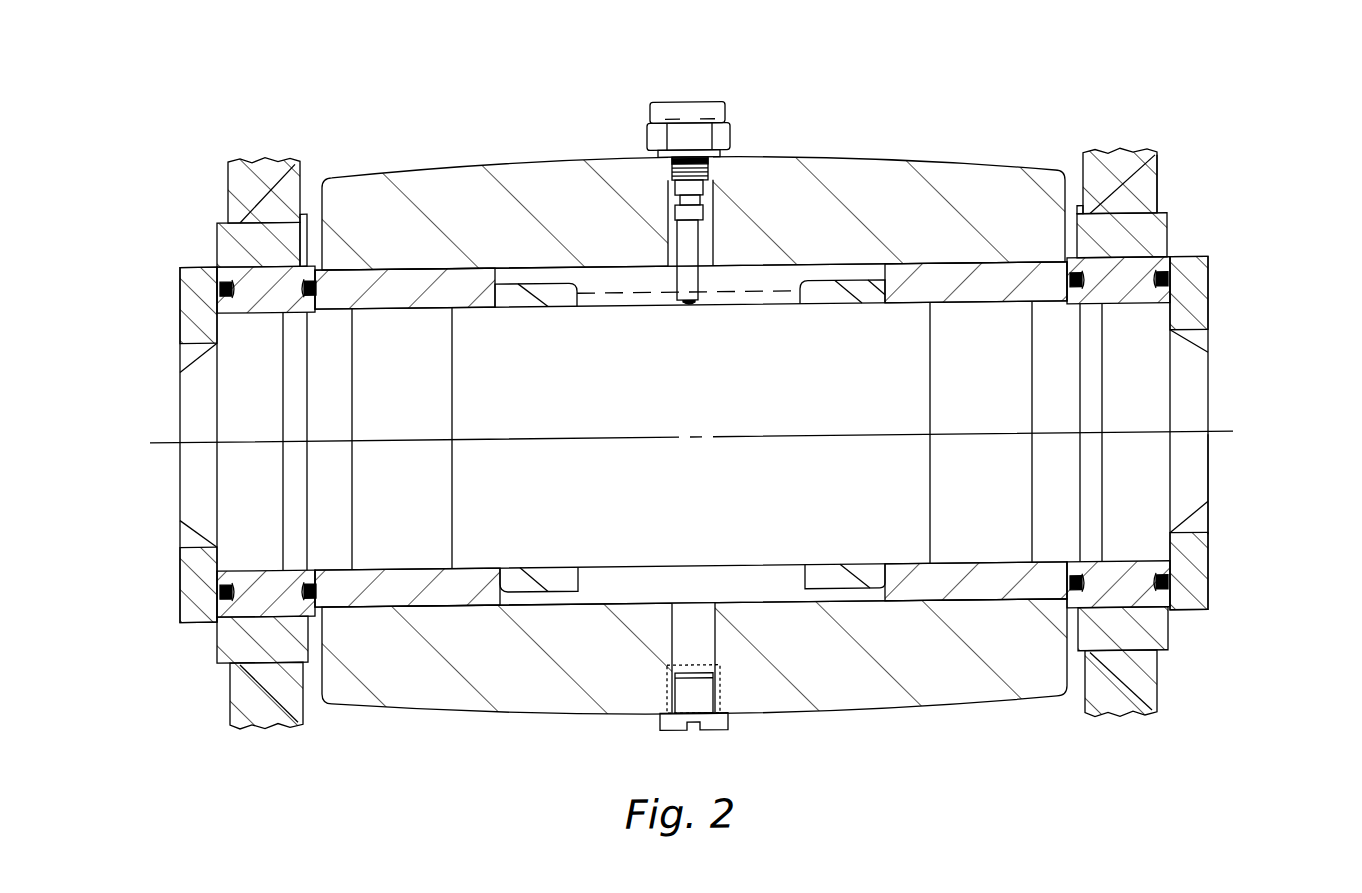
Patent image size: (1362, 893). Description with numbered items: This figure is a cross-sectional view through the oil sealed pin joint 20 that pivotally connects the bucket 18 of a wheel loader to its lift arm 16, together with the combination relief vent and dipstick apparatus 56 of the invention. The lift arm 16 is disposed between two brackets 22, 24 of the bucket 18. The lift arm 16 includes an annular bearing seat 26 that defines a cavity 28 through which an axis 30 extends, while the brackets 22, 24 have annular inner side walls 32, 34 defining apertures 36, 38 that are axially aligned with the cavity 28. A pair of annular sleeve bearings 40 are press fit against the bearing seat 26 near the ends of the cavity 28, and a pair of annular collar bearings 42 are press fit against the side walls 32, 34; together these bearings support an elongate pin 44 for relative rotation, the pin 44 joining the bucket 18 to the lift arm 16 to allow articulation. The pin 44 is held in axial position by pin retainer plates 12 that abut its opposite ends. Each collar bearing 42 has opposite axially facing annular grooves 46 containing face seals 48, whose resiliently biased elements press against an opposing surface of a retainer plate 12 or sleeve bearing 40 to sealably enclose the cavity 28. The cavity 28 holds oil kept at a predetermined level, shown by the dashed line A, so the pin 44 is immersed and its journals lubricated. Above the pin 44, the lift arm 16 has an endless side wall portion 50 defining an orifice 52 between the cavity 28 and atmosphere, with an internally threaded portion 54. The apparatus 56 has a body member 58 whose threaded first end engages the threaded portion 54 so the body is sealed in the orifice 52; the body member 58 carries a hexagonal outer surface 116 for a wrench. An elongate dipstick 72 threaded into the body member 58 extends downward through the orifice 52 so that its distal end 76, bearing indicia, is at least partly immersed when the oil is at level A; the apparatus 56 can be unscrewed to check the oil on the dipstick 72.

The pin retainer plate 12 is at (182, 580).
The lift arm 16 is at (872, 160).
The bucket 18 is at (1168, 176).
The oil sealed pin joint 20 is at (1210, 706).
The bracket 22 is at (230, 158).
The bracket 24 is at (1160, 162).
The annular bearing seat 26 is at (777, 270).
The cavity 28 is at (613, 582).
The axis 30 is at (1230, 436).
The annular inner side wall 32 is at (218, 235).
The annular inner side wall 34 is at (1172, 262).
The aperture 36 is at (300, 256).
The aperture 38 is at (1110, 262).
The annular sleeve bearing 40 is at (418, 265).
The annular collar bearing 42 is at (217, 298).
The elongate pin 44 is at (1215, 491).
The annular groove 46 is at (222, 283).
The face seal 48 is at (232, 292).
The endless side wall portion 50 is at (705, 258).
The orifice 52 is at (672, 262).
The internally threaded portion 54 is at (670, 172).
The combination relief vent and dipstick apparatus 56 is at (733, 86).
The body member 58 is at (692, 122).
The dipstick 72 is at (703, 237).
The distal end 76 is at (687, 306).
The hexagonal outer surface 116 is at (732, 134).
The predetermined oil level A is at (796, 292).